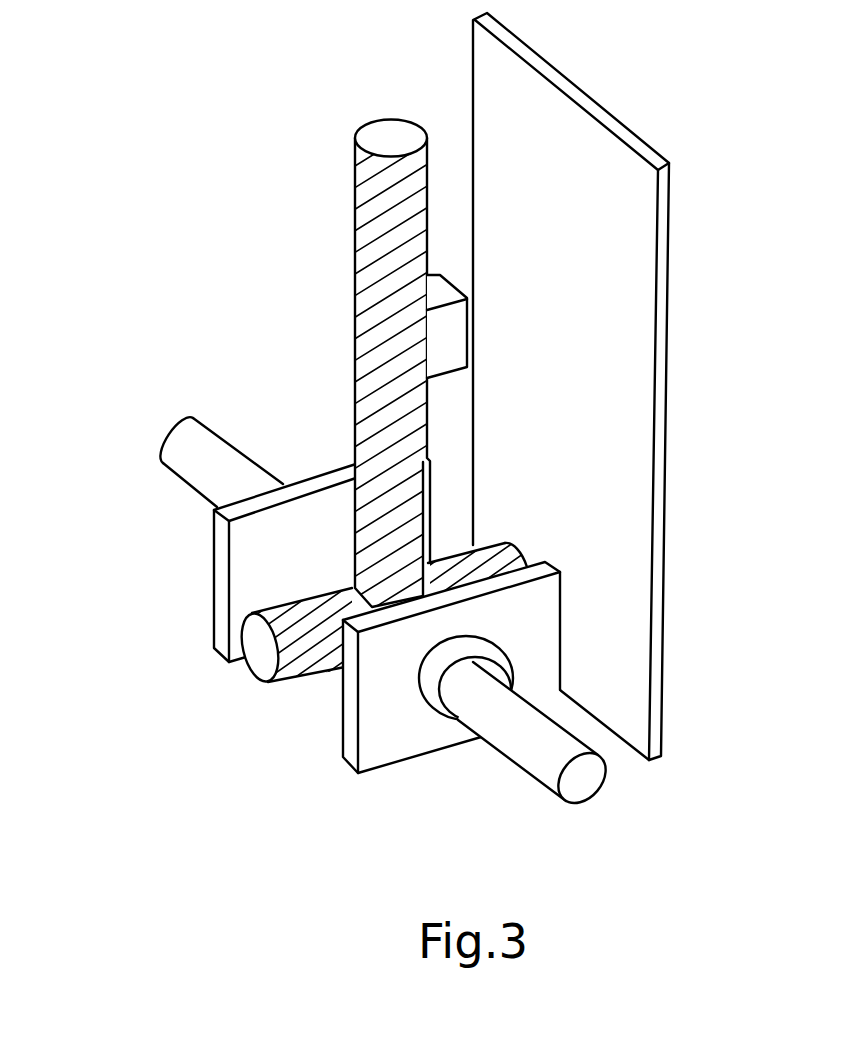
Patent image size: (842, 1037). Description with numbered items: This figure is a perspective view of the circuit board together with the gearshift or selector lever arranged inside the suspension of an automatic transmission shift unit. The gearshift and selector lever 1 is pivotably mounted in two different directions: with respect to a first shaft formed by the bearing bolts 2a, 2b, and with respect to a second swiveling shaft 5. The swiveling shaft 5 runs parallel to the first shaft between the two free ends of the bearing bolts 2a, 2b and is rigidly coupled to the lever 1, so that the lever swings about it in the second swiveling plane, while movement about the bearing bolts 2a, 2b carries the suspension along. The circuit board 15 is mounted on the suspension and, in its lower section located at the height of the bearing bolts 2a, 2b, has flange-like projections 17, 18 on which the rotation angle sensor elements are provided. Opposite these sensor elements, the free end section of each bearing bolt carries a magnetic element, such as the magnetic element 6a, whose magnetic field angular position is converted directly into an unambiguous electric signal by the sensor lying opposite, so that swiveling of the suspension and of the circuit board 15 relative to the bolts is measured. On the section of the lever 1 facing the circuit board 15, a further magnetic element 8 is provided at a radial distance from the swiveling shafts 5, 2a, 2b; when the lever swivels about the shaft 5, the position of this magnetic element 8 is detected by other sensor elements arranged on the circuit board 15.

The gearshift and selector lever 1 is at (316, 349).
The bearing bolt 2a is at (627, 706).
The bearing bolt 2b is at (170, 434).
The swiveling shaft 5 is at (341, 604).
The magnetic element 6a is at (610, 613).
The magnetic element 8 is at (608, 372).
The circuit board 15 is at (635, 386).
The flange-like projection 17 is at (201, 563).
The flange-like projection 18 is at (431, 724).